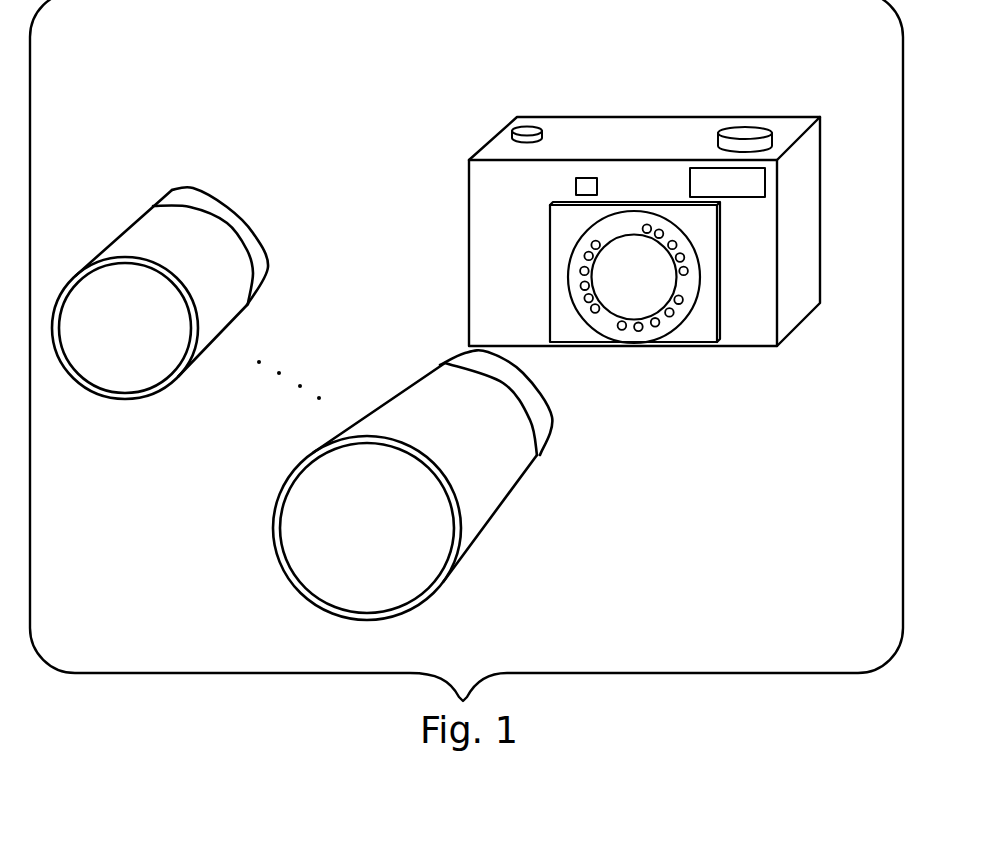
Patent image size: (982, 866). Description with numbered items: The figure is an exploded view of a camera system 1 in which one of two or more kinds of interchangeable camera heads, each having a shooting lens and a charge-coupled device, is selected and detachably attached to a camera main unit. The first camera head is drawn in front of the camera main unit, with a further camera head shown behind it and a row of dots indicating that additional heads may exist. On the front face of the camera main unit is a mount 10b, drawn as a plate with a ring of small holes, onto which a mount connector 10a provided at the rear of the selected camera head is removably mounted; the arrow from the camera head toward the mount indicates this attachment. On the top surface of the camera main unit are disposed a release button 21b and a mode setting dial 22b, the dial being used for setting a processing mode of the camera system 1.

The camera system 1 is at (663, 80).
The mount connector 10a is at (553, 405).
The mount 10b is at (673, 318).
The release button 21b is at (530, 128).
The mode setting dial 22b is at (745, 128).